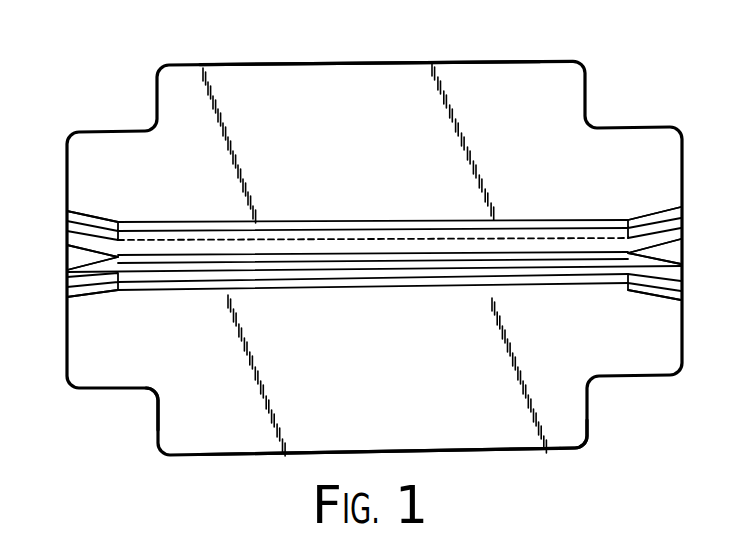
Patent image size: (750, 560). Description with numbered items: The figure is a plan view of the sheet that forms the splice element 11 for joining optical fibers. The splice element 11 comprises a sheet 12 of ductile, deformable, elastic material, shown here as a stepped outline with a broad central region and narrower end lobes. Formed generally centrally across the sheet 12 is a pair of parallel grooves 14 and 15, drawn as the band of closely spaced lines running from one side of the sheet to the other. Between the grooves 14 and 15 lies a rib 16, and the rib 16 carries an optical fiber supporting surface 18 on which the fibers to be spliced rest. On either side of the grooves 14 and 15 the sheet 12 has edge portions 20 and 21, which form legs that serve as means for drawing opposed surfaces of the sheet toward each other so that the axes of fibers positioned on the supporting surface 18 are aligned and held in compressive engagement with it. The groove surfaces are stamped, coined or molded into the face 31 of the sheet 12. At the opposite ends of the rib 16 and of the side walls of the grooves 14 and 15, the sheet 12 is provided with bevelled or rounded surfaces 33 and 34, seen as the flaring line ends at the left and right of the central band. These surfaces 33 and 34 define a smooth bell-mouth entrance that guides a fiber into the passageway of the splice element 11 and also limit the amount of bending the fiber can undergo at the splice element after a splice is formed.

The splice element 11 is at (596, 79).
The sheet 12 is at (586, 452).
The groove 14 is at (290, 240).
The groove 15 is at (290, 292).
The rib 16 is at (417, 245).
The optical fiber supporting surface 18 is at (362, 255).
The edge portion 20 is at (498, 438).
The edge portion 21 is at (373, 75).
The face of the sheet 31 is at (178, 398).
The bevelled surface 33 is at (682, 267).
The bevelled surface 34 is at (67, 258).